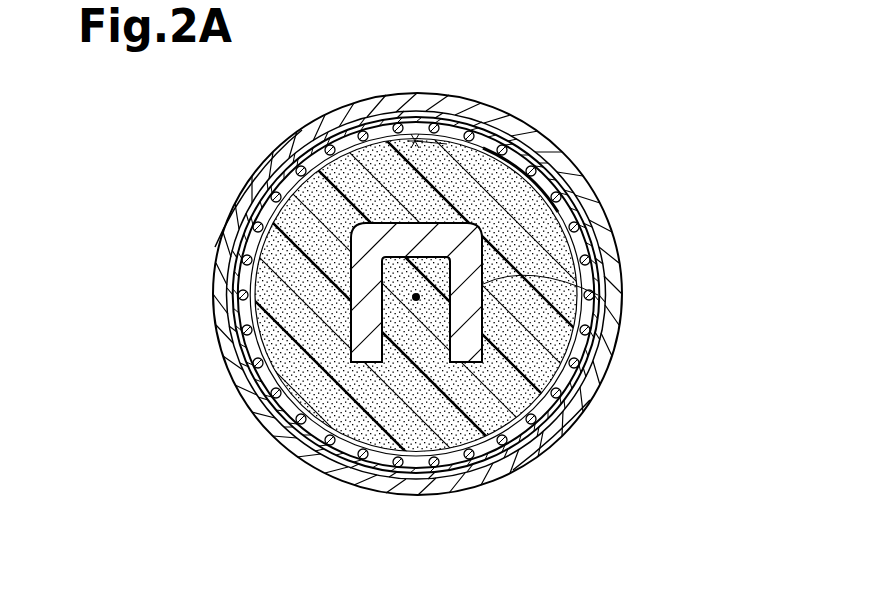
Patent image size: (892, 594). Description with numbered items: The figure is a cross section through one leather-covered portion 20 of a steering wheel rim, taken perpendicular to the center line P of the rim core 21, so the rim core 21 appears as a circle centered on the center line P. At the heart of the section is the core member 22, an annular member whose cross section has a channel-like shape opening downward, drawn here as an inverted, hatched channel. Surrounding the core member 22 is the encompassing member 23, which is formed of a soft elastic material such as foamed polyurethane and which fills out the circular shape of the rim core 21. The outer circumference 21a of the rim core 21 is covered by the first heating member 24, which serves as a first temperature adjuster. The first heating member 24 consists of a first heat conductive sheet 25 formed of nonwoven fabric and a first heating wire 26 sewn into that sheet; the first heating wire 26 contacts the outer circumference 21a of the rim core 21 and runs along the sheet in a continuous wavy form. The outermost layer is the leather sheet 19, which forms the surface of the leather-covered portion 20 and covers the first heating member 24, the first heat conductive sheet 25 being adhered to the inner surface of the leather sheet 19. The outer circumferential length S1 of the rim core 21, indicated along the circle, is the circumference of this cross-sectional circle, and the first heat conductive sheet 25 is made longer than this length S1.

The leather sheet 19 is at (577, 176).
The leather-covered portion 20 is at (252, 462).
The rim core 21 is at (470, 295).
The outer circumference of the rim core 21a is at (585, 233).
The core member 22 is at (598, 295).
The encompassing member 23 is at (601, 318).
The first heating member 24 is at (459, 294).
The first heat conductive sheet 25 is at (602, 366).
The first heating wire 26 is at (594, 393).
The outer circumferential length of the rim core S1 is at (483, 150).
The center line of the rim core P is at (416, 300).